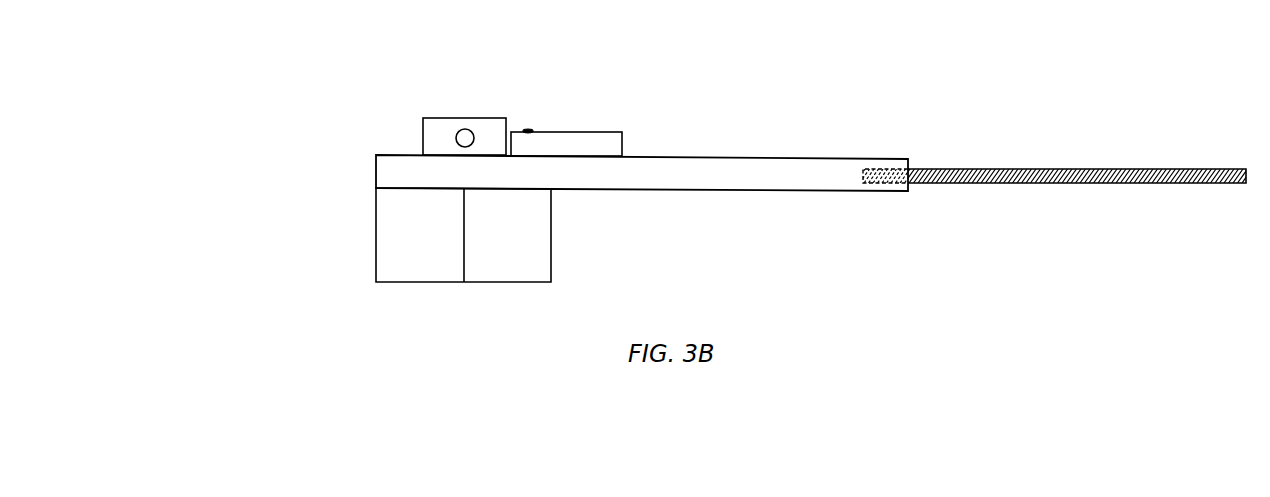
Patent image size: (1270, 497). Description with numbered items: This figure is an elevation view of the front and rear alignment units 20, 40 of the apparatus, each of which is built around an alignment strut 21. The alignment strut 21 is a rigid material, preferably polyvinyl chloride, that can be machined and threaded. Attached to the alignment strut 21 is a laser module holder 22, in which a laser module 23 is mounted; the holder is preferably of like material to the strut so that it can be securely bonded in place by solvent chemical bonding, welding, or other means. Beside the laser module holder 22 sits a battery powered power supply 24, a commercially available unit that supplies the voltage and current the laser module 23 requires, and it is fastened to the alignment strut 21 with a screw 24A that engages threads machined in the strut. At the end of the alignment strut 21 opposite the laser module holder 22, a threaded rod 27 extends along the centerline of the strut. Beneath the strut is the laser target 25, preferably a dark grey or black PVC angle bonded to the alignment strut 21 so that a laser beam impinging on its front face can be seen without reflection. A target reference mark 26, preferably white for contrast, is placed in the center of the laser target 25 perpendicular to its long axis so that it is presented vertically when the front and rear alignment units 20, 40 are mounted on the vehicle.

The front alignment unit 20 is at (307, 47).
The rear alignment unit 40 is at (307, 47).
The alignment strut 21 is at (777, 157).
The laser module holder 22 is at (470, 118).
The laser module 23 is at (462, 130).
The power supply 24 is at (597, 133).
The screw 24A is at (529, 131).
The laser target 25 is at (505, 282).
The target reference mark 26 is at (464, 282).
The threaded rod 27 is at (1025, 170).